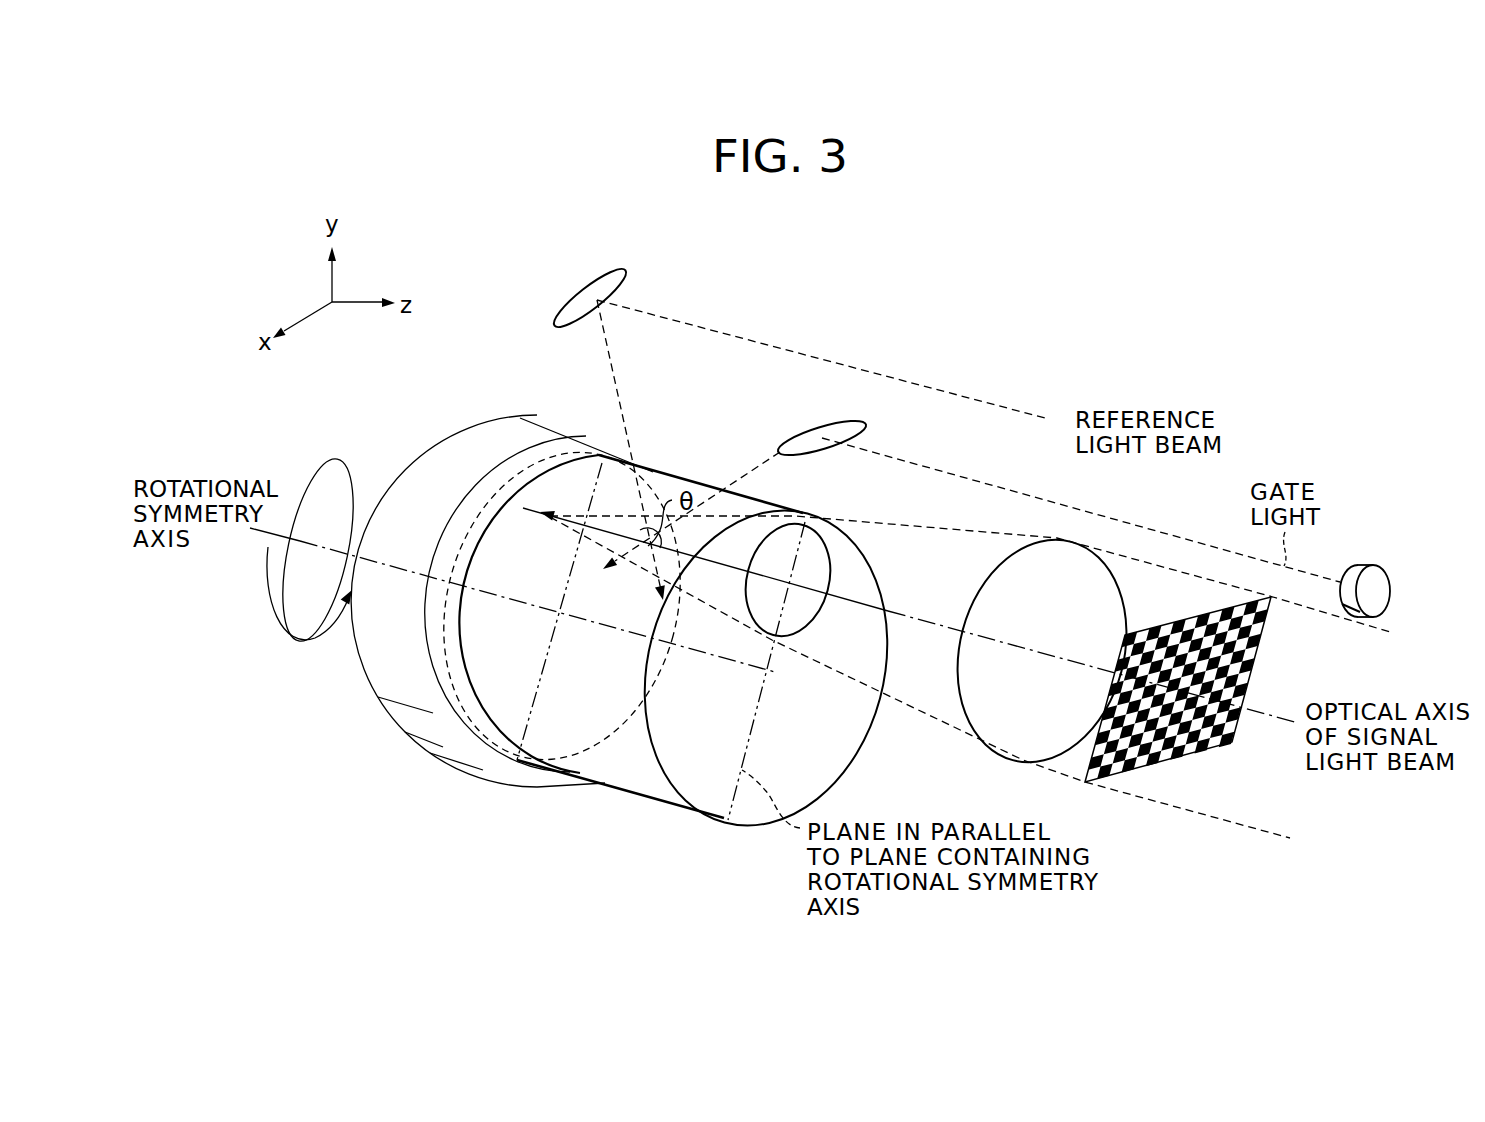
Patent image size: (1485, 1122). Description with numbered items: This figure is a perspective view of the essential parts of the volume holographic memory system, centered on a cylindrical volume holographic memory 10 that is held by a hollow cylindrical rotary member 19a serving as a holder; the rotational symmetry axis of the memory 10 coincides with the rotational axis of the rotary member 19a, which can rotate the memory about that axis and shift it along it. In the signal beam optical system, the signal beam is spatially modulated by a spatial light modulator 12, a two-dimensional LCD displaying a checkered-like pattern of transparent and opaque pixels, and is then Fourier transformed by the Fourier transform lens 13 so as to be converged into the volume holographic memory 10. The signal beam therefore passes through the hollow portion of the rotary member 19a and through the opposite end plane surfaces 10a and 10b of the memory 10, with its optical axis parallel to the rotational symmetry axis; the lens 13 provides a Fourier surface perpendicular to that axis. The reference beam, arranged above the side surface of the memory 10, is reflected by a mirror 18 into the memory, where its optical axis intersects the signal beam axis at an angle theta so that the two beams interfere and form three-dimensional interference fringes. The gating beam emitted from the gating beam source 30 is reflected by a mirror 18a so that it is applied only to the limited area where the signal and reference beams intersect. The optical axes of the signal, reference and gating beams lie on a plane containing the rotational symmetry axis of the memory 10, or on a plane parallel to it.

The volume holographic memory 10 is at (858, 567).
The end plane surface 10a is at (830, 734).
The end plane surface 10b is at (522, 475).
The spatial light modulator 12 is at (1207, 745).
The Fourier transform lens 13 is at (978, 670).
The mirror 18 is at (599, 282).
The mirror 18a is at (807, 433).
The hollow cylindrical rotary member 19a is at (393, 717).
The gating beam source 30 is at (1377, 573).